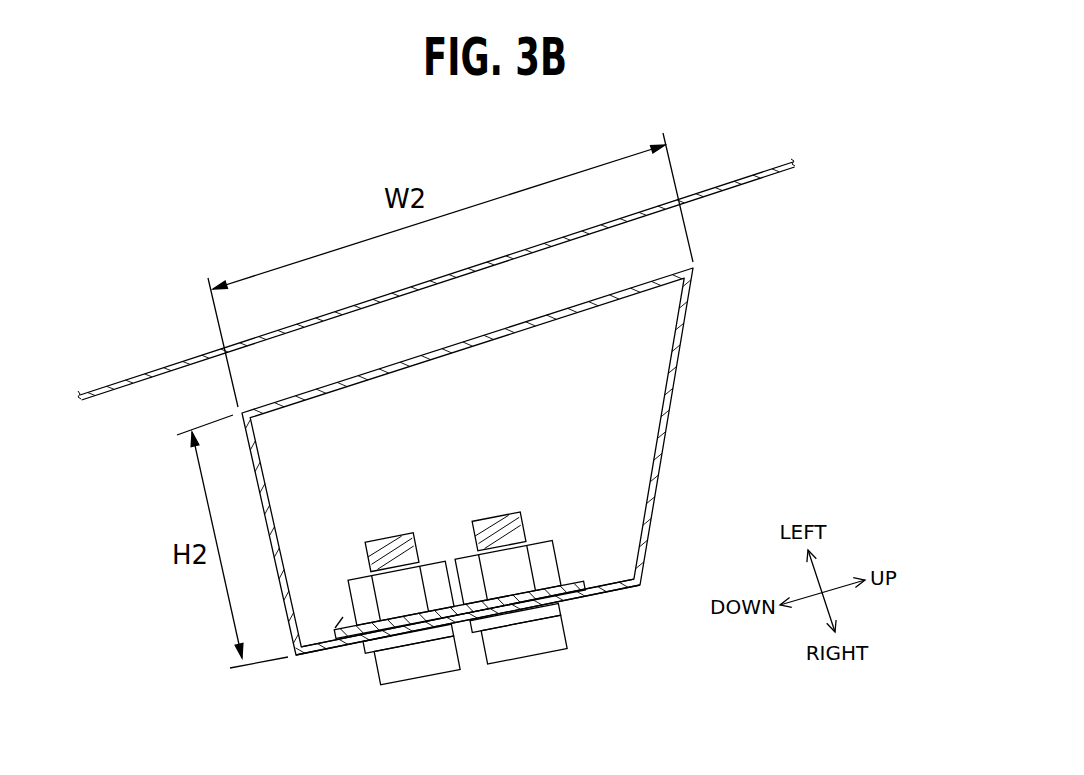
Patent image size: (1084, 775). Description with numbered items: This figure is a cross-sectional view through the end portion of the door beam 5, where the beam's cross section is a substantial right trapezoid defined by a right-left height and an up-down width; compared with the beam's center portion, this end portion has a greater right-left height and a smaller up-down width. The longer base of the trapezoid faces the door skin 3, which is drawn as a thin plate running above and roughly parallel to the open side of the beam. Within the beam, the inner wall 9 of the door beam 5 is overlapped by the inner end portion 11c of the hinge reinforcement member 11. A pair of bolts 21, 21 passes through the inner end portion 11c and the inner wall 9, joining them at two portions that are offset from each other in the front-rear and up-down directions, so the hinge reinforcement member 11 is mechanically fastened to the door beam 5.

The door skin 3 is at (740, 180).
The door beam 5 is at (658, 488).
The inner wall 9 is at (602, 597).
The hinge reinforcement member 11 is at (459, 609).
The inner end portion 11c is at (345, 620).
The bolt 21 is at (404, 607).